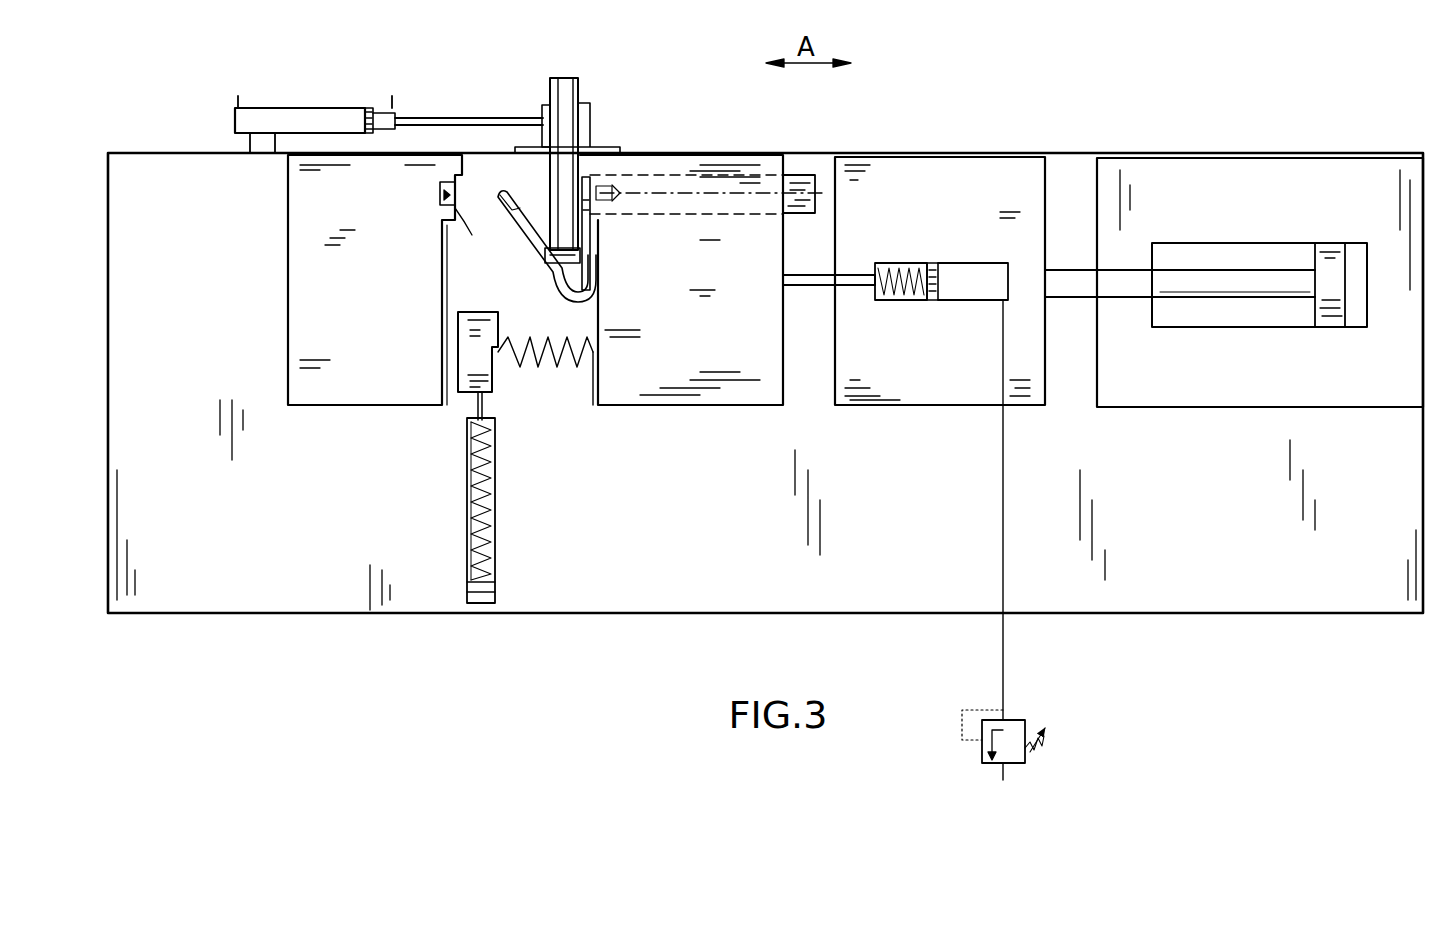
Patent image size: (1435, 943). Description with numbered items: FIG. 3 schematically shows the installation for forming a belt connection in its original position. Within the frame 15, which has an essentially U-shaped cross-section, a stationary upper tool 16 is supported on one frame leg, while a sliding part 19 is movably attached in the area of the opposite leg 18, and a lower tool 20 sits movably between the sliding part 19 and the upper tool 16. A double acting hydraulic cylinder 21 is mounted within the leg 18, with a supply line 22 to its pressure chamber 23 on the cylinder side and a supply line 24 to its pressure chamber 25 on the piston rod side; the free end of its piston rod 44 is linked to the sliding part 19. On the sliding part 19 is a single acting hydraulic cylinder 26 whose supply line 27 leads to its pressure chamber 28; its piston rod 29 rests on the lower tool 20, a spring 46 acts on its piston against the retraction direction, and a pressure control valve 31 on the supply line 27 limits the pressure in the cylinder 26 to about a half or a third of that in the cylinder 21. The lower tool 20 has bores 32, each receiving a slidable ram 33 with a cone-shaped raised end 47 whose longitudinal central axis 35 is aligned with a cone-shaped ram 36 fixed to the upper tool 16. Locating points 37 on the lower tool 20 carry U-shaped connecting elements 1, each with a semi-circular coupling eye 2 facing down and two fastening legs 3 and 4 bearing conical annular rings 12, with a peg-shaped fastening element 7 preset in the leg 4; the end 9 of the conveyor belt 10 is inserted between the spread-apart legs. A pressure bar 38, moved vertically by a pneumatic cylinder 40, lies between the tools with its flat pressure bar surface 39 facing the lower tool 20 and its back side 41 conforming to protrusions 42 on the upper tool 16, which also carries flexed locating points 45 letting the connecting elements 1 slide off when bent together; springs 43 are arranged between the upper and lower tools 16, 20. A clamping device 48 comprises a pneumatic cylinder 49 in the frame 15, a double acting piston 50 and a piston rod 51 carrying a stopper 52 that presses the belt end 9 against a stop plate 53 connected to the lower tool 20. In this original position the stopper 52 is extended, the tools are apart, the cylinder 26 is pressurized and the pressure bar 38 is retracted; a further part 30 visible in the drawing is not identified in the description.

The connecting element 1 is at (548, 300).
The coupling eye 2 is at (572, 302).
The fastening leg 3 is at (548, 275).
The fastening leg 4 is at (592, 245).
The fastening element 7 is at (608, 190).
The belt end 9 is at (582, 84).
The conveyor belt 10 is at (540, 168).
The conical annular ring 12 is at (512, 192).
The frame 15 is at (601, 602).
The upper tool 16 is at (300, 323).
The leg 18 is at (1350, 162).
The sliding part 19 is at (876, 160).
The lower tool 20 is at (693, 163).
The double acting hydraulic cylinder 21 is at (1220, 232).
The supply line 22 is at (1355, 338).
The pressure chamber 23 is at (1358, 288).
The supply line 24 is at (1168, 330).
The pressure chamber 25 is at (1163, 312).
The single acting hydraulic cylinder 26 is at (965, 243).
The supply line 27 is at (1003, 660).
The pressure chamber 28 is at (978, 290).
The piston rod 29 is at (808, 285).
The piston 30 is at (933, 300).
The pressure control valve 31 is at (975, 767).
The bores 32 is at (740, 172).
The ram 33 is at (805, 178).
The longitudinal central axis 35 is at (750, 198).
The ram 36 is at (442, 200).
The locating points 37 is at (596, 293).
The pressure bar 38 is at (466, 398).
The pressure bar surface 39 is at (520, 345).
The pneumatic cylinder 40 is at (455, 580).
The back side 41 is at (458, 322).
The protrusions 42 is at (448, 228).
The springs 43 is at (592, 370).
The piston rod 44 is at (1228, 290).
The flexed locating points 45 is at (457, 202).
The spring 46 is at (910, 265).
The raised end 47 is at (618, 205).
The clamping device 48 is at (412, 100).
The pneumatic cylinder 49 is at (305, 108).
The piston 50 is at (368, 108).
The piston rod 51 is at (465, 118).
The stopper 52 is at (544, 104).
The stop plate 53 is at (590, 112).